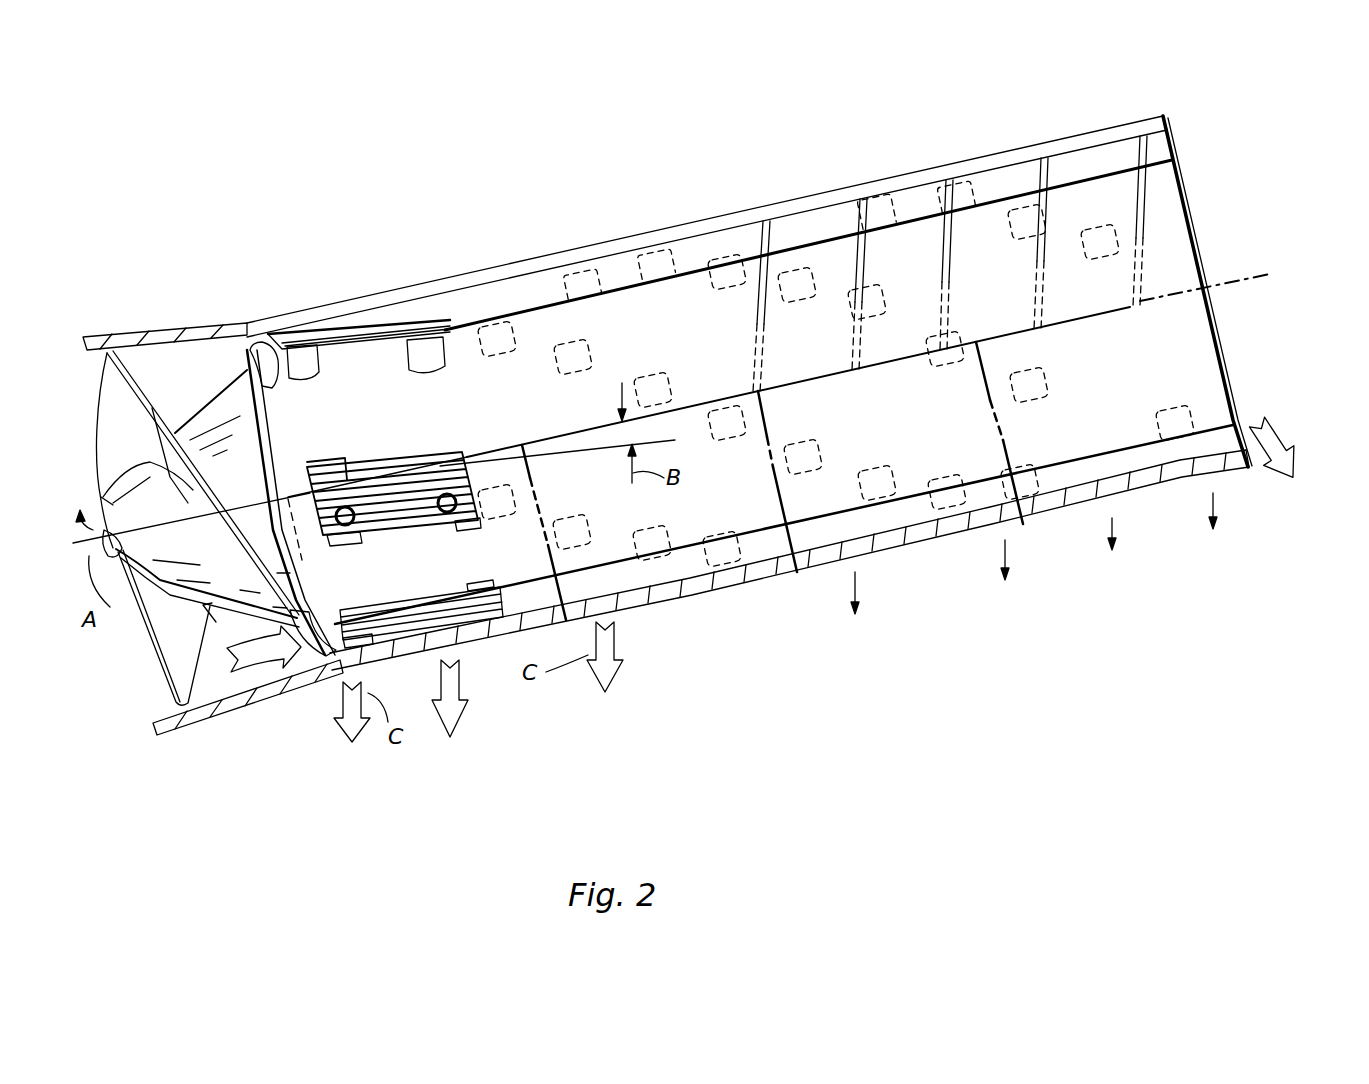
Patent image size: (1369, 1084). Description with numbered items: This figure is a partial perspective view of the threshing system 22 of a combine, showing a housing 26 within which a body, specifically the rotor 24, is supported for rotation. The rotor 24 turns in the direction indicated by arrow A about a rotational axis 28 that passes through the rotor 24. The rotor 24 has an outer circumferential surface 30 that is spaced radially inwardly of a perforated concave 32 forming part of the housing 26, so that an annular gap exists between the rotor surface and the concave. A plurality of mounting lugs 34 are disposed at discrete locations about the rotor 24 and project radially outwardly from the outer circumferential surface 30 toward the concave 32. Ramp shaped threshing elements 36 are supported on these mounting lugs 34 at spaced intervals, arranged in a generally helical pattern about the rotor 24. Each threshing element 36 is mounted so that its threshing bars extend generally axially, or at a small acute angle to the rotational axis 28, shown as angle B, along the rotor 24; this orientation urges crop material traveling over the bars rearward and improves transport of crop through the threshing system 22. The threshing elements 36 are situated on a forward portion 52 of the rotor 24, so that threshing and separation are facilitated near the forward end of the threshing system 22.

The threshing system 22 is at (771, 176).
The rotor 24 is at (1165, 377).
The housing 26 is at (623, 239).
The rotational axis 28 is at (1260, 277).
The outer circumferential surface 30 is at (1135, 450).
The perforated concave 32 is at (736, 588).
The mounting lugs 34 is at (428, 376).
The threshing elements 36 is at (346, 330).
The forward portion 52 is at (810, 712).